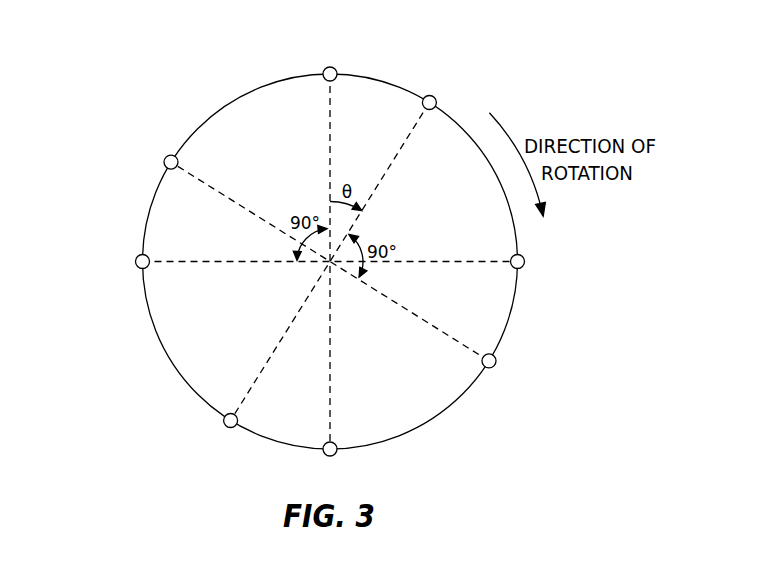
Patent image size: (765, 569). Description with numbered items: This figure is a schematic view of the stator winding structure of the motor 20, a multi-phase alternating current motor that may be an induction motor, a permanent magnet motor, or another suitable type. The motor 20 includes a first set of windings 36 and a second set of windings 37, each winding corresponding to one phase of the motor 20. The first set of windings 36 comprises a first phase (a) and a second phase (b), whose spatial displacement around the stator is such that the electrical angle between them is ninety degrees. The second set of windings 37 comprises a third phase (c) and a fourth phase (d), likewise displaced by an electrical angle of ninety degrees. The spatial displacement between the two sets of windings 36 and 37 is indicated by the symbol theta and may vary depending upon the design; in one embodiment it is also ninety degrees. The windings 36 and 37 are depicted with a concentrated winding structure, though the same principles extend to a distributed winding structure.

The motor 20 is at (266, 83).
The first set of windings 36 is at (347, 49).
The second set of windings 37 is at (460, 82).